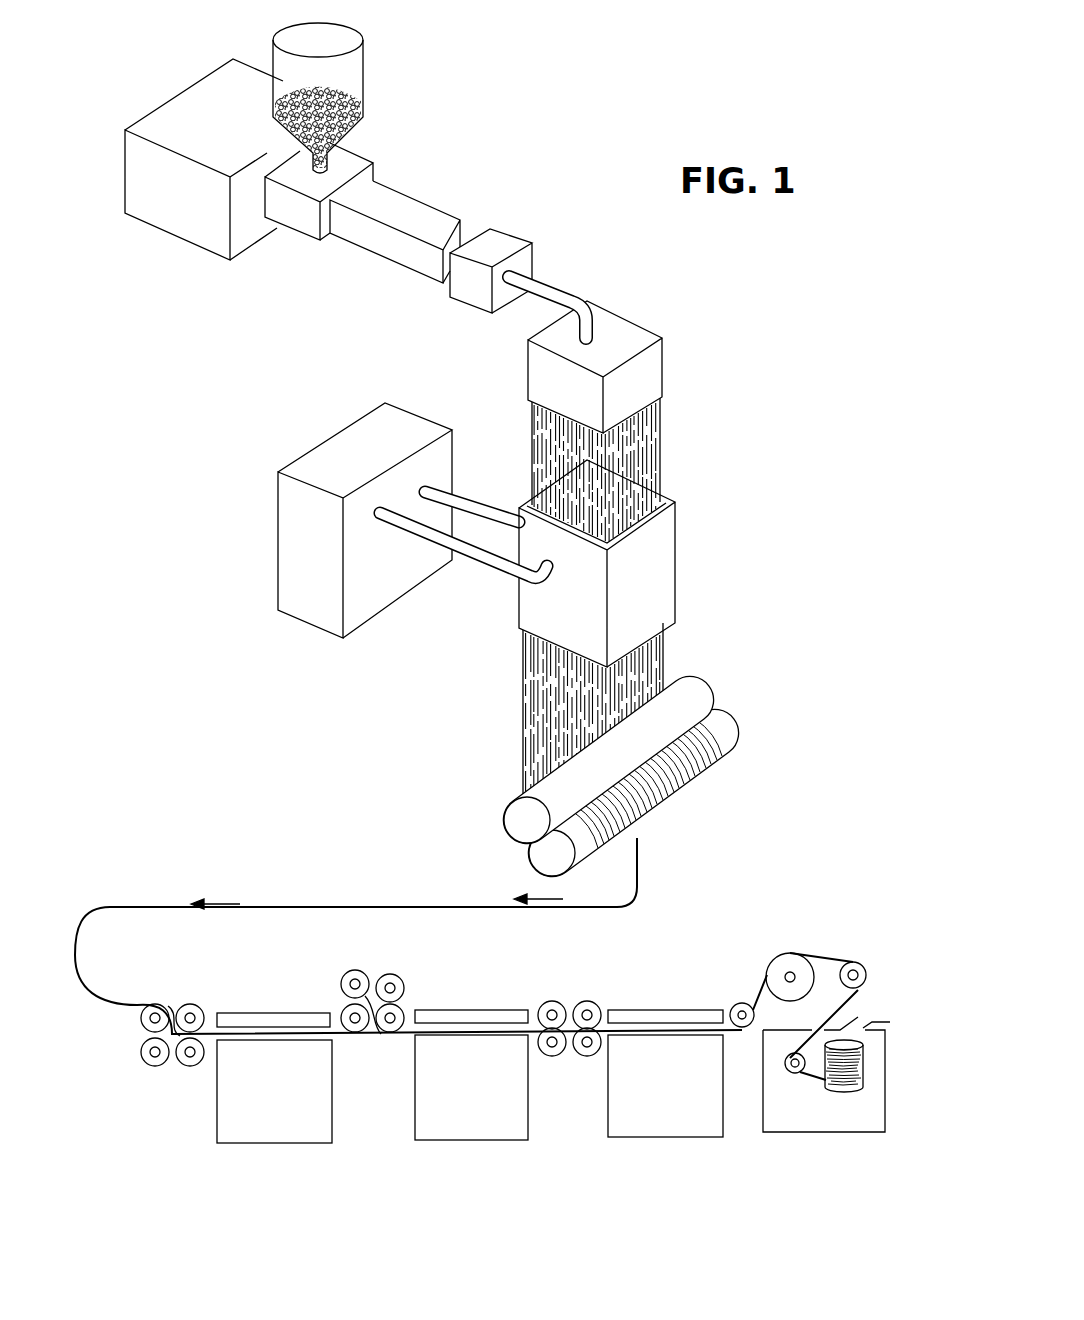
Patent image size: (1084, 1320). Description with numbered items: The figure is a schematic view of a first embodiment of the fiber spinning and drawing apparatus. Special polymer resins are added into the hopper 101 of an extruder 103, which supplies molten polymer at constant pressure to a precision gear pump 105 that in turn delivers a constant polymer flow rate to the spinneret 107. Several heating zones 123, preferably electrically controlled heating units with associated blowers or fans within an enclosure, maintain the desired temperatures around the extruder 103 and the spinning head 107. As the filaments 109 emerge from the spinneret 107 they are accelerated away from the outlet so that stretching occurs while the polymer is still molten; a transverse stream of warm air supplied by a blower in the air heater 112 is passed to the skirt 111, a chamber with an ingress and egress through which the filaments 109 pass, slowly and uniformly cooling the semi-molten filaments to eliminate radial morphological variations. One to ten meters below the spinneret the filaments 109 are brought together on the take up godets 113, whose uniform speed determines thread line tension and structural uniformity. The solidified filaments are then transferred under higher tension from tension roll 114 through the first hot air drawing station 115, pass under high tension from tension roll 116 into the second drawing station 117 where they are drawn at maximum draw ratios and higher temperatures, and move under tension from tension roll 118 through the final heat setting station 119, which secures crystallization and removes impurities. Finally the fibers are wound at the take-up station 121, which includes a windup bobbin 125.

The hopper 101 is at (359, 74).
The extruder 103 is at (186, 88).
The gear pump 105 is at (471, 302).
The spinneret 107 is at (660, 352).
The filaments 109 is at (662, 438).
The skirt 111 is at (670, 568).
The air heater 112 is at (325, 448).
The take up godets 113 is at (724, 733).
The tension roll 114 is at (186, 996).
The first hot air drawing station 115 is at (288, 1139).
The tension roll 116 is at (382, 971).
The second drawing station 117 is at (478, 1135).
The tension roll 118 is at (582, 993).
The heat setting station 119 is at (668, 1135).
The take-up station 121 is at (820, 1133).
The heating zones 123 is at (372, 247).
The windup bobbin 125 is at (865, 1067).